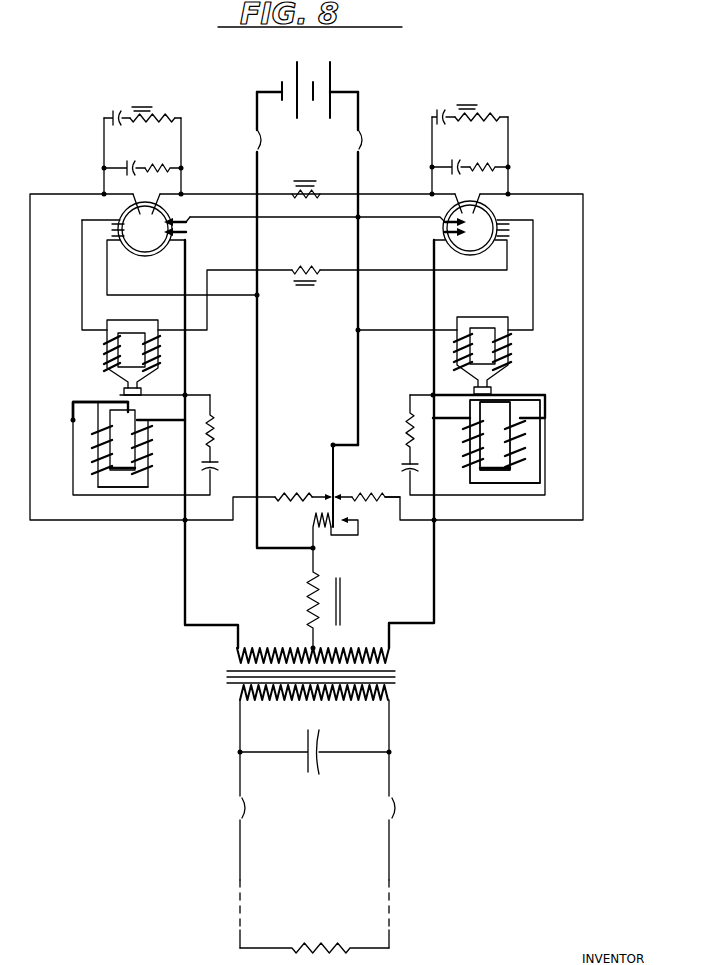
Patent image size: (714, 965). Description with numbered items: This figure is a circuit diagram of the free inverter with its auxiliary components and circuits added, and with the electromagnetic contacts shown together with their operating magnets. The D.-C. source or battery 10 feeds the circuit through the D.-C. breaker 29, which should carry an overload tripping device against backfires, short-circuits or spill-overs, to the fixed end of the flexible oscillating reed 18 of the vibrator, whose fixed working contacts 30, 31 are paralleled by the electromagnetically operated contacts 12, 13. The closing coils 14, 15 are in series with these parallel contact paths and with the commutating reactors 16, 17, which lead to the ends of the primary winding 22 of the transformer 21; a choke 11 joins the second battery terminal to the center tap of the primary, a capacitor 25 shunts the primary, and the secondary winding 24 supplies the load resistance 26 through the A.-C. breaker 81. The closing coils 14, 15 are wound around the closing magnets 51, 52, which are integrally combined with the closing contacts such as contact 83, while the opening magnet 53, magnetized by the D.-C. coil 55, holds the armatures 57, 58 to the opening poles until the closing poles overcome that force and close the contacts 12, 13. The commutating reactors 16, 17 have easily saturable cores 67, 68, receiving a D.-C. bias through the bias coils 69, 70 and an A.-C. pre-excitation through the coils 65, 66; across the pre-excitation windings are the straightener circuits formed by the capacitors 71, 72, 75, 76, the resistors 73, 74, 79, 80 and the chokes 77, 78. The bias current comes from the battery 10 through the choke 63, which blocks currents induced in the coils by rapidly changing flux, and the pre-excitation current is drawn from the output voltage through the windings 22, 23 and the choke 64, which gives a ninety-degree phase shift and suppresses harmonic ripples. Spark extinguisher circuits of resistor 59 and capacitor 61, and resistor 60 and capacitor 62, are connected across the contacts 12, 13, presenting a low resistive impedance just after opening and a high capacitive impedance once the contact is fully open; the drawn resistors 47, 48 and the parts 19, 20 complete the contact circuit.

The D.-C. source or battery 10 is at (335, 80).
The choke 11 is at (348, 588).
The electromagnetically operated contact 12 is at (112, 396).
The electromagnetically operated contact 13 is at (494, 396).
The closing coil 14 is at (95, 441).
The closing coil 15 is at (466, 435).
The commutating reactor 16 is at (187, 232).
The commutating reactor 17 is at (440, 232).
The flexible oscillating reed 18 is at (335, 455).
The contact arm 19 is at (350, 514).
The resistor 20 is at (308, 530).
The transformer 21 is at (398, 673).
The primary winding 22 is at (375, 638).
The primary winding portion 23 is at (292, 638).
The secondary winding 24 is at (342, 706).
The capacitor 25 is at (325, 765).
The resistance 26 is at (333, 945).
The starting switch or D.-C. breaker 29 is at (272, 138).
The fixed working contact 30 is at (322, 487).
The fixed working contact 31 is at (344, 486).
The resistor 47 is at (299, 491).
The resistor 48 is at (383, 494).
The closing magnet 51 is at (148, 484).
The closing magnet 52 is at (548, 481).
The opening magnet 53 is at (140, 320).
The D.-C. magnetizing coil 55 is at (98, 352).
The armature 57 is at (145, 390).
The armature 58 is at (470, 387).
The spark extinguisher resistor 59 is at (212, 434).
The spark extinguisher resistor 60 is at (406, 430).
The spark extinguisher capacitor 61 is at (220, 468).
The spark extinguisher capacitor 62 is at (394, 469).
The choke 63 is at (322, 292).
The choke 64 is at (330, 176).
The A.-C. pre-excitation coil 65 is at (170, 203).
The A.-C. pre-excitation coil 66 is at (498, 204).
The easily saturable core 67 is at (152, 237).
The easily saturable core 68 is at (477, 236).
The bias coil 69 is at (110, 231).
The bias coil 70 is at (510, 233).
The straightener capacitor 71 is at (131, 162).
The straightener capacitor 72 is at (460, 158).
The straightener resistor 73 is at (167, 161).
The straightener resistor 74 is at (493, 158).
The straightener capacitor 75 is at (118, 114).
The straightener capacitor 76 is at (442, 114).
The straightener choke 77 is at (154, 100).
The straightener choke 78 is at (482, 100).
The straightener resistor 79 is at (170, 114).
The straightener resistor 80 is at (495, 110).
The A.-C. breaker 81 is at (238, 809).
The closing contact 83 is at (66, 400).